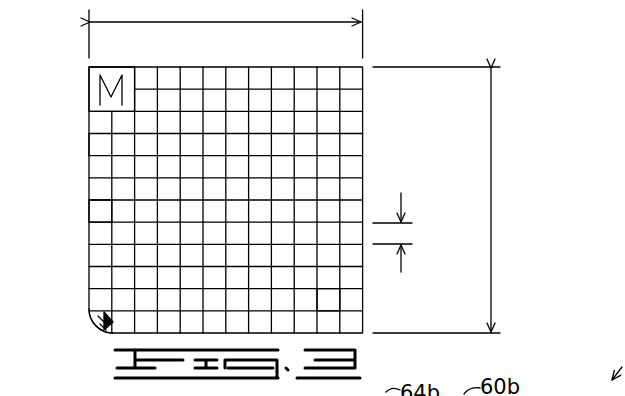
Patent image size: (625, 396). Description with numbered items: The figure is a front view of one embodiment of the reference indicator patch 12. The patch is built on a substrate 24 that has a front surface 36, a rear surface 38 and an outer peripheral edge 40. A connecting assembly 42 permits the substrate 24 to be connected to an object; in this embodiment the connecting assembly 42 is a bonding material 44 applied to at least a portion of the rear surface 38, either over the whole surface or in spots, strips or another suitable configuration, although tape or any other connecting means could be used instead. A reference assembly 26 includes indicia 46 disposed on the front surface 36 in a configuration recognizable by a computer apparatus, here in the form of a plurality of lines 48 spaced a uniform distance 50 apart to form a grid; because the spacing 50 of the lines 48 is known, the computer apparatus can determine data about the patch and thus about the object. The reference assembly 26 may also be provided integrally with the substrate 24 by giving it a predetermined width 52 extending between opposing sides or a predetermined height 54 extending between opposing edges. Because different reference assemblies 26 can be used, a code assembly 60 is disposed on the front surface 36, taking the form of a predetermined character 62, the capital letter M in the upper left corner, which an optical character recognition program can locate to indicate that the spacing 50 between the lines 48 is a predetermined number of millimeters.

The reference indicator patch 12 is at (407, 36).
The substrate 24 is at (366, 102).
The reference assembly 26 is at (352, 136).
The front surface 36 is at (97, 216).
The rear surface 38 is at (104, 318).
The outer peripheral edge 40 is at (88, 143).
The connecting assembly 42 is at (106, 328).
The bonding material 44 is at (100, 312).
The indicia 46 is at (347, 164).
The lines 48 is at (318, 290).
The spacing 50 is at (401, 272).
The predetermined width 52 is at (236, 18).
The predetermined height 54 is at (493, 190).
The code assembly 60 is at (118, 65).
The predetermined character 62 is at (100, 88).